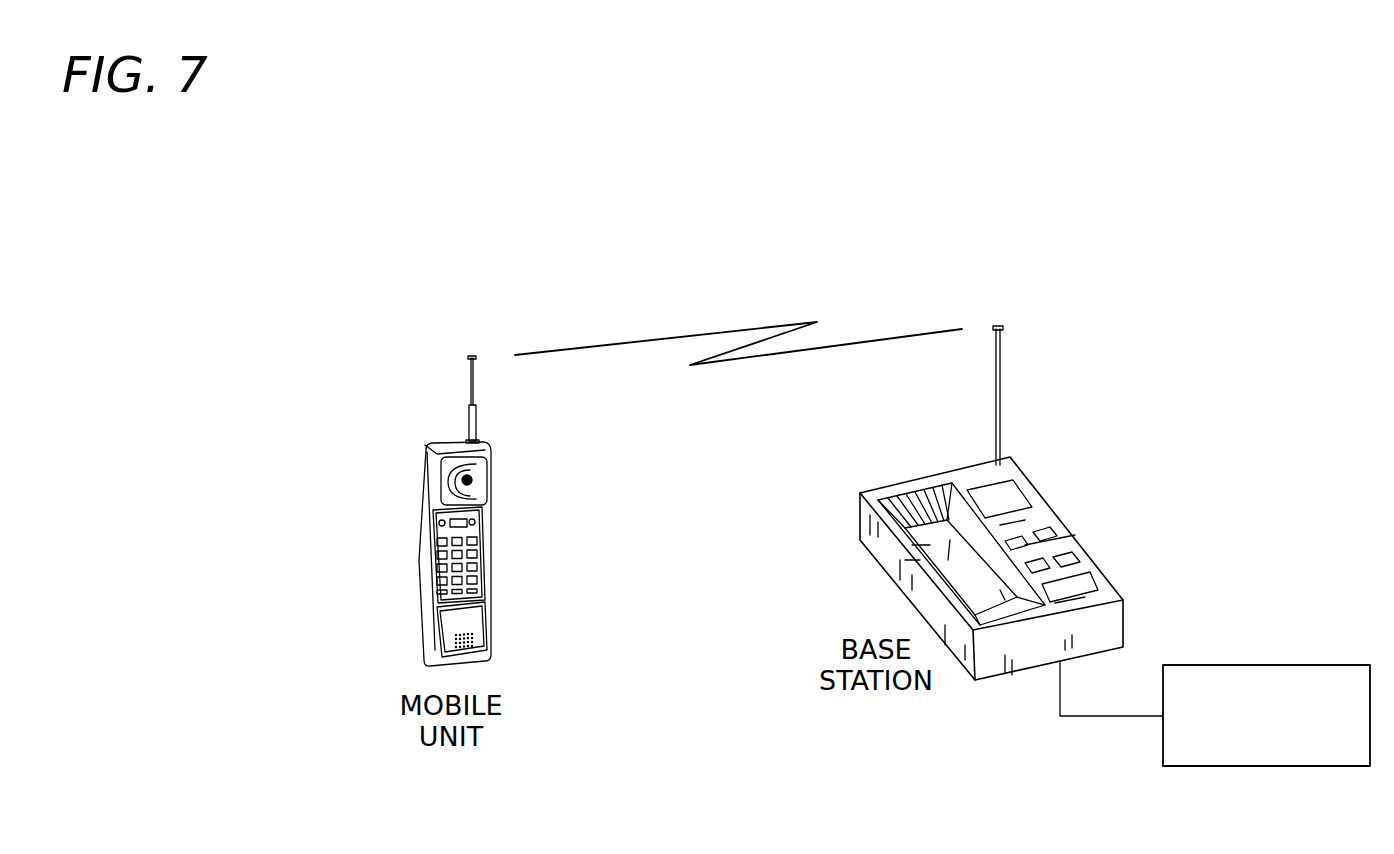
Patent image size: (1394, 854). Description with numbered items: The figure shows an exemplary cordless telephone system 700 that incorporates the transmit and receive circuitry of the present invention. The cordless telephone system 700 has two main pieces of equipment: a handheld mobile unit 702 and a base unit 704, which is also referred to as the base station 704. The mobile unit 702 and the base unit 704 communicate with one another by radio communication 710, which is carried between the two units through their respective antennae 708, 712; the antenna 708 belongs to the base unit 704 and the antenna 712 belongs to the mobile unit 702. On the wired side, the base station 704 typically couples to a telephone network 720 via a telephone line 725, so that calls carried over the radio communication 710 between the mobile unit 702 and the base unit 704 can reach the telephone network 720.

The cordless telephone system 700 is at (918, 237).
The mobile unit 702 is at (476, 485).
The base unit 704 is at (930, 478).
The antenna 708 is at (1003, 400).
The radio communication 710 is at (648, 328).
The antenna 712 is at (469, 357).
The telephone network 720 is at (1292, 768).
The telephone line 725 is at (1113, 717).